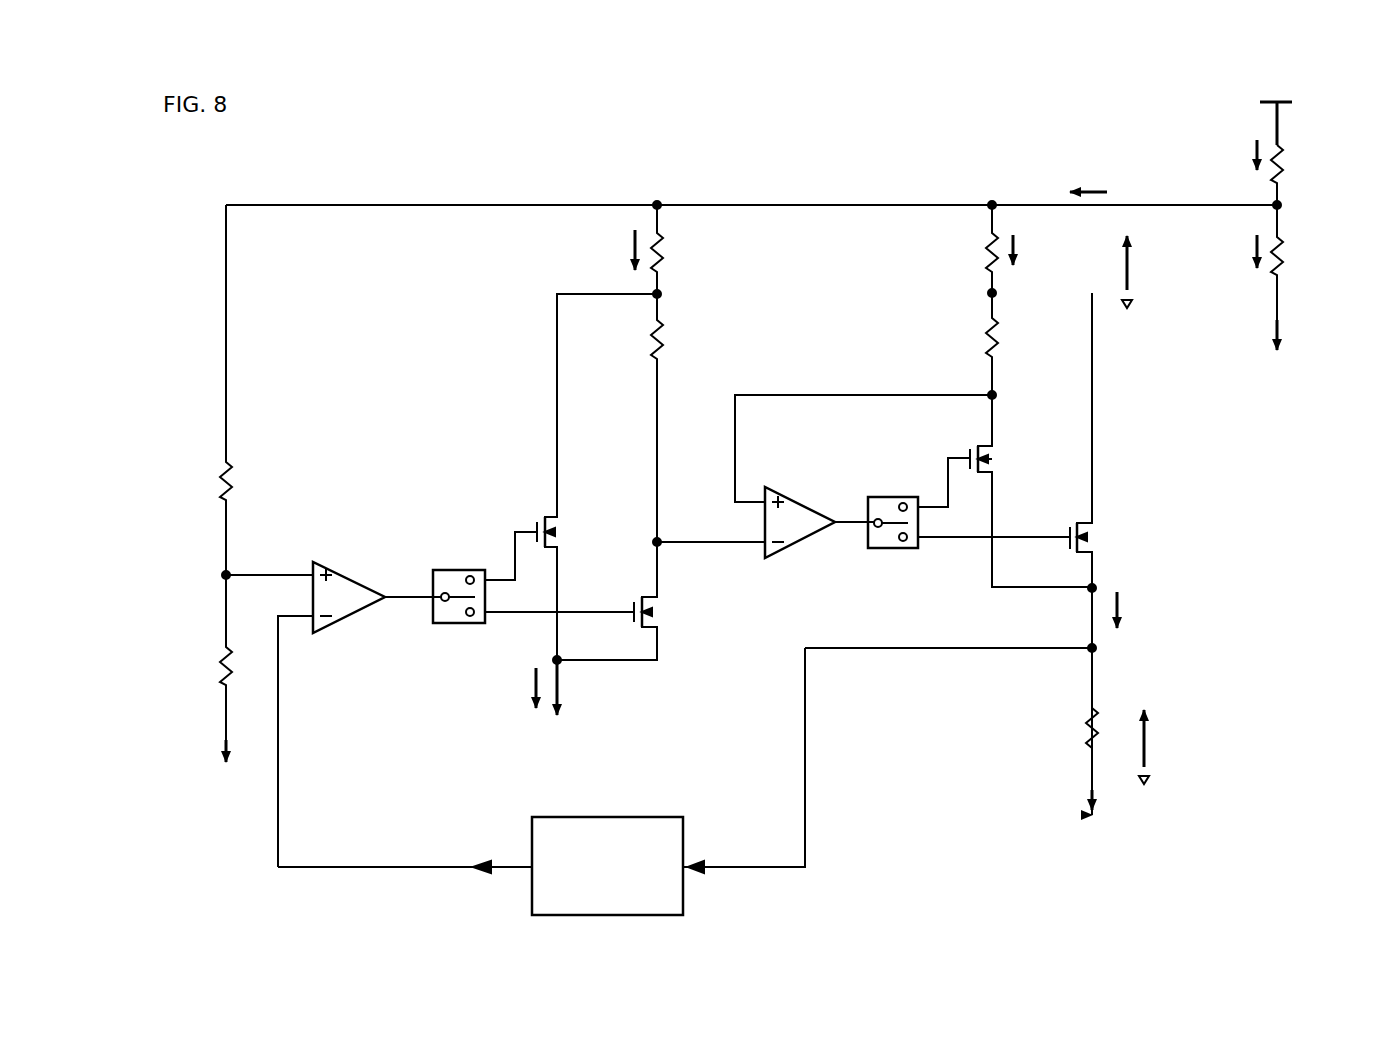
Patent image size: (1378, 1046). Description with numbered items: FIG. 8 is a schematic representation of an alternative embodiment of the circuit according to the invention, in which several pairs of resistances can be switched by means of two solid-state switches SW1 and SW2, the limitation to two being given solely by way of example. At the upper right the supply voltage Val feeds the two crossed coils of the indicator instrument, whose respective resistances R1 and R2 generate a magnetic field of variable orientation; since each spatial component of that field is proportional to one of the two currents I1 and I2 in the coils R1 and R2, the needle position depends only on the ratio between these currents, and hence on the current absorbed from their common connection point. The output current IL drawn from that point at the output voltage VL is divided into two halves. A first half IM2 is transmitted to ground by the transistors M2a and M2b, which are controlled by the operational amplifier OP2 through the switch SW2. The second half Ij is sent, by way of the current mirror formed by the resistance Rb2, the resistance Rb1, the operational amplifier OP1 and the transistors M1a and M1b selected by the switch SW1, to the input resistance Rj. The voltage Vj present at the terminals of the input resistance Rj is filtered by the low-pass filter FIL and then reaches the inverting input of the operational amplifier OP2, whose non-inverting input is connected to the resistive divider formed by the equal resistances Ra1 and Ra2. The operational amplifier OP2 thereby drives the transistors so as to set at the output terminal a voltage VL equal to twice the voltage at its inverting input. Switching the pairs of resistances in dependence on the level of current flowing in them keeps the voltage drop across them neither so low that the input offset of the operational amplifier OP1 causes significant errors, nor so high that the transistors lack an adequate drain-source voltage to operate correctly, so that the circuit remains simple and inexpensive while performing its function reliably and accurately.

The supply voltage Val is at (1277, 102).
The crossed coil resistance R1 is at (1290, 163).
The crossed coil resistance R2 is at (1290, 268).
The coil current I1 is at (1246, 153).
The coil current I2 is at (1250, 254).
The output current IL is at (1080, 186).
The output voltage VL is at (1130, 262).
The current mirror resistance Rb1 is at (988, 252).
The second half of the output current Ij is at (1017, 253).
The NMOS transistor M1a is at (992, 467).
The NMOS transistor M1b is at (1096, 546).
The solid-state switch SW1 is at (888, 497).
The operational amplifier OP1 is at (806, 548).
The input resistance Rj is at (1086, 732).
The voltage at input resistance Vj is at (1147, 736).
The current mirror resistance Rb2 is at (662, 253).
The first half of the output current IM2 is at (630, 253).
The transistor M2a is at (559, 530).
The transistor M2b is at (660, 626).
The solid-state switch SW2 is at (462, 568).
The operational amplifier OP2 is at (349, 562).
The divider resistance Ra1 is at (220, 480).
The divider resistance Ra2 is at (221, 672).
The low-pass filter FIL is at (574, 815).